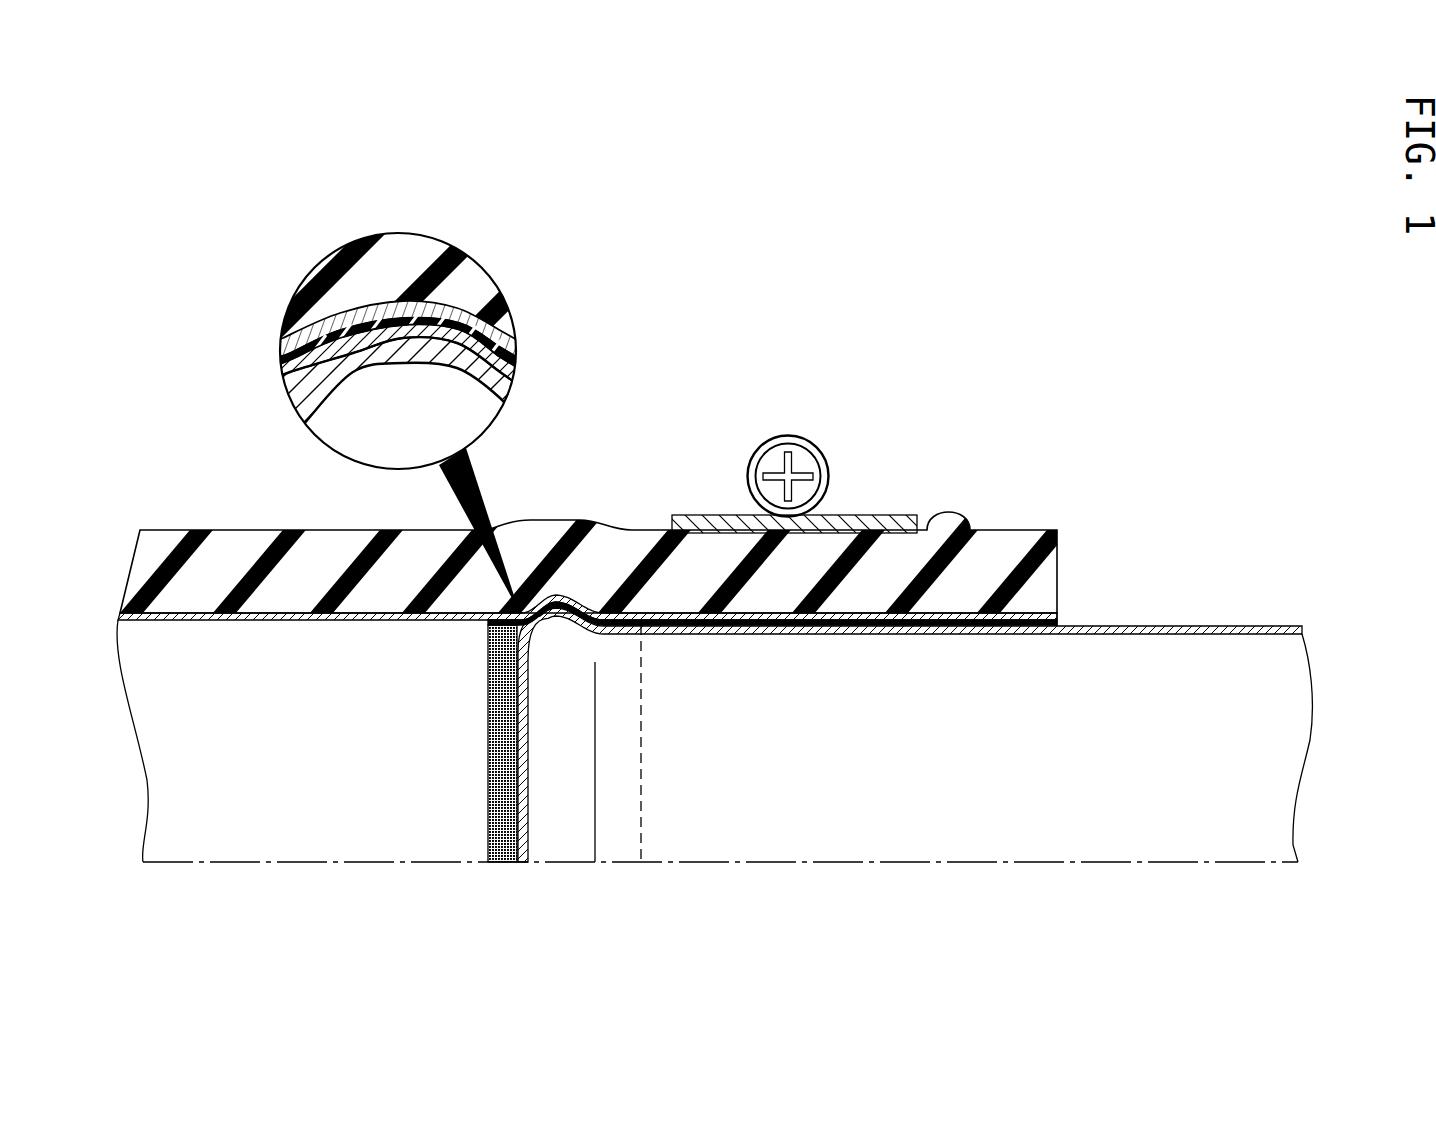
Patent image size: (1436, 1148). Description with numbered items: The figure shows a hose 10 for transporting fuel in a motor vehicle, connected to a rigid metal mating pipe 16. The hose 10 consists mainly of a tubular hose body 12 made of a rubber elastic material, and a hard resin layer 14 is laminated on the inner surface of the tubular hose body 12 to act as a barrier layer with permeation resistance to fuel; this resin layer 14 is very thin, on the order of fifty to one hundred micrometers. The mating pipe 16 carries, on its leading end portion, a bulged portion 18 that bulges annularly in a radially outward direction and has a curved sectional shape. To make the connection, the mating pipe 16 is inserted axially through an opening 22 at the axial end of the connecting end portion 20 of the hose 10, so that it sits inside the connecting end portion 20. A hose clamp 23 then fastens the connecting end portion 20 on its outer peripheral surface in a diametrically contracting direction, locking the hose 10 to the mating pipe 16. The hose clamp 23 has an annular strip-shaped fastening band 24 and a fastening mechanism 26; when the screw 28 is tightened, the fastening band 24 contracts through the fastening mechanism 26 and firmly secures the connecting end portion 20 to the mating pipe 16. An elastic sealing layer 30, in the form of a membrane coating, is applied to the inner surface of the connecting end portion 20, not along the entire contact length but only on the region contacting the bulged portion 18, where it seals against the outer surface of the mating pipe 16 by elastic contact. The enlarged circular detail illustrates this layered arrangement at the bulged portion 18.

The hose 10 is at (633, 368).
The tubular hose body 12 is at (233, 528).
The hard resin layer 14 is at (385, 303).
The mating pipe 16 is at (1218, 625).
The bulged portion 18 is at (437, 345).
The connecting end portion 20 is at (752, 600).
The opening 22 is at (1045, 632).
The hose clamp 23 is at (796, 413).
The fastening band 24 is at (718, 515).
The fastening mechanism 26 is at (821, 449).
The screw 28 is at (805, 487).
The elastic sealing layer 30 is at (352, 318).